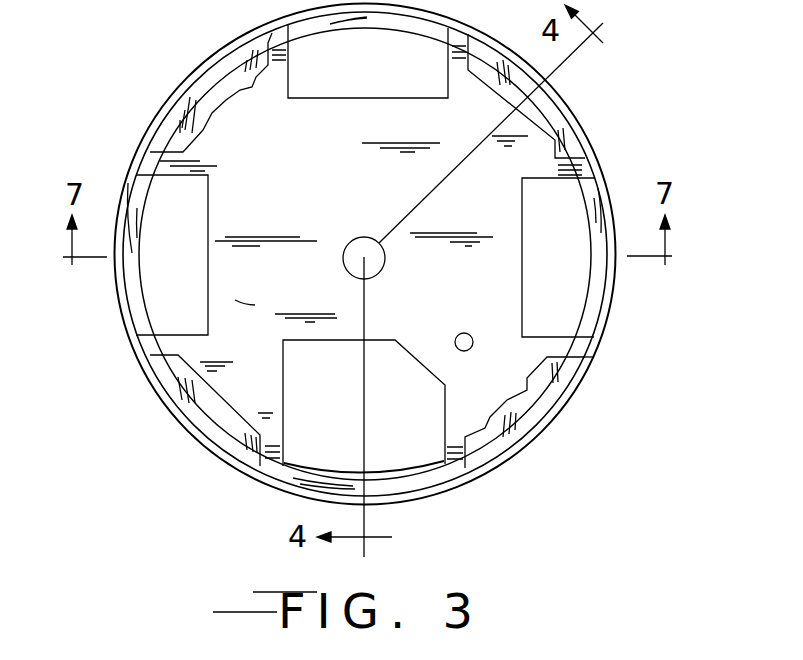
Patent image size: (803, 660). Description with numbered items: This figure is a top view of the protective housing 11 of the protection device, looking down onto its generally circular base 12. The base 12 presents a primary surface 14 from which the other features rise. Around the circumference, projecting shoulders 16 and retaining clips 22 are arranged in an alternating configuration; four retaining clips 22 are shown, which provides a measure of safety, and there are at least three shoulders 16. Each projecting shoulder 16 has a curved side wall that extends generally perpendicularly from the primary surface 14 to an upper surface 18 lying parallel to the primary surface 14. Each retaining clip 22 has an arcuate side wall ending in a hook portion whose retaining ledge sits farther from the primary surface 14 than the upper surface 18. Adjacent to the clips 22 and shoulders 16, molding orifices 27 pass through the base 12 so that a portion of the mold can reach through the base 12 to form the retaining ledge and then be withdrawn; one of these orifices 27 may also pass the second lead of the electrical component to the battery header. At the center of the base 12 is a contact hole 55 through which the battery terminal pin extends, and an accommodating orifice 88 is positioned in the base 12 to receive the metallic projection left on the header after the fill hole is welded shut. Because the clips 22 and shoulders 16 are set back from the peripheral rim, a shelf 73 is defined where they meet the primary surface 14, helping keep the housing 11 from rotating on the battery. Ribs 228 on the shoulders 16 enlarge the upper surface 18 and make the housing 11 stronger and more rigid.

The protective housing 11 is at (125, 422).
The base 12 is at (341, 233).
The primary surface 14 is at (240, 313).
The projecting shoulder 16 is at (250, 100).
The upper surface 18 is at (198, 97).
The retaining clip 22 is at (425, 14).
The molding orifice 27 is at (288, 63).
The contact hole 55 is at (365, 237).
The shelf 73 is at (593, 357).
The accommodating orifice 88 is at (470, 332).
The rib 228 is at (235, 95).